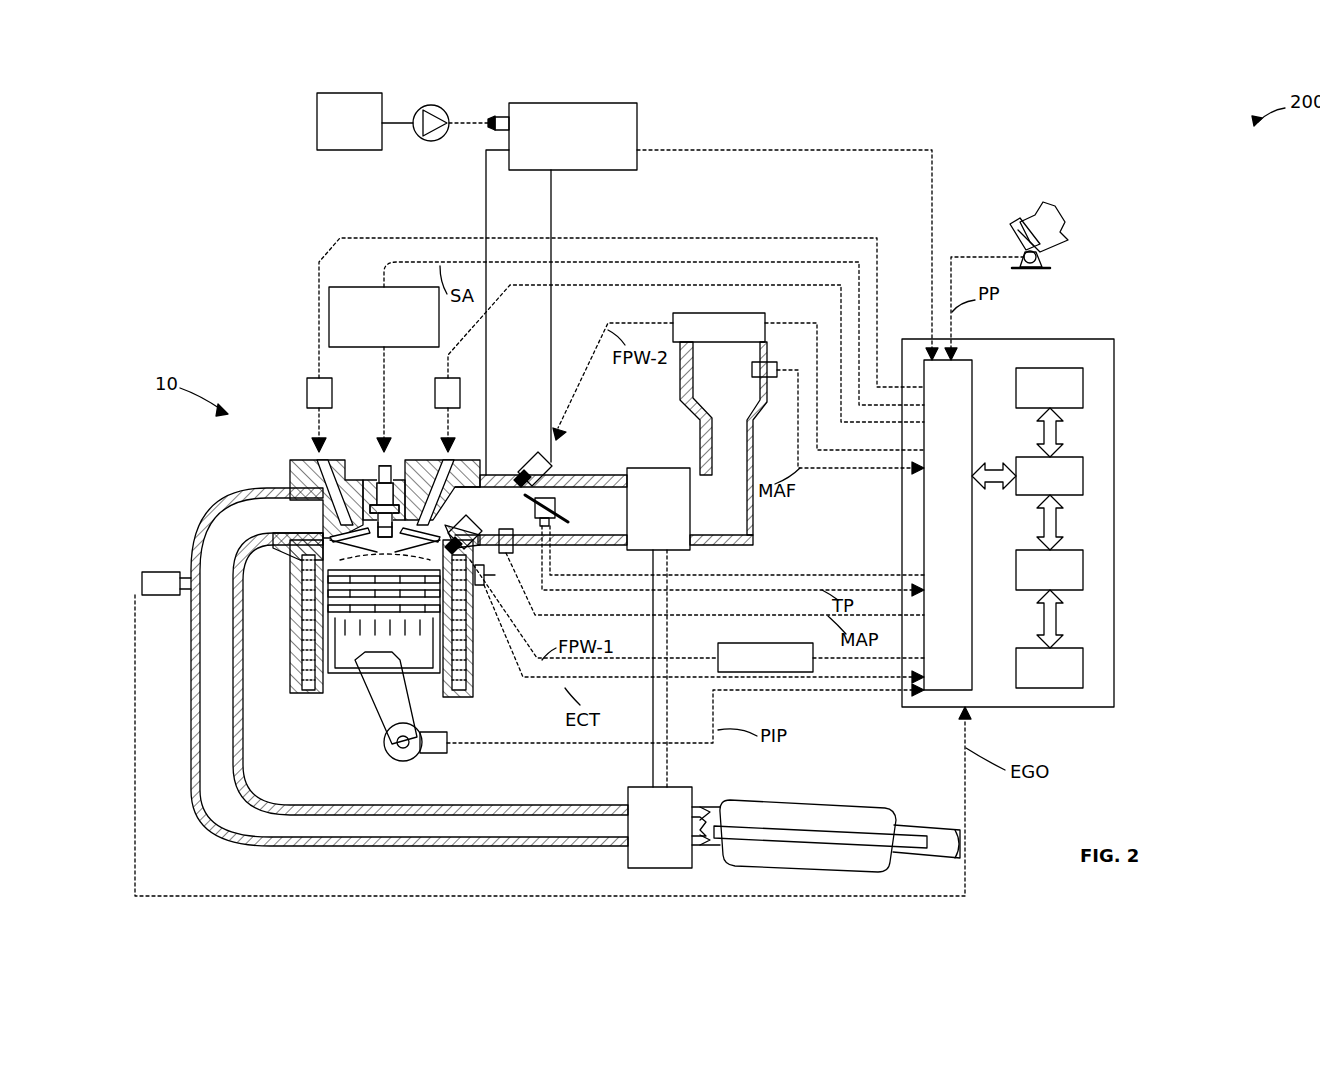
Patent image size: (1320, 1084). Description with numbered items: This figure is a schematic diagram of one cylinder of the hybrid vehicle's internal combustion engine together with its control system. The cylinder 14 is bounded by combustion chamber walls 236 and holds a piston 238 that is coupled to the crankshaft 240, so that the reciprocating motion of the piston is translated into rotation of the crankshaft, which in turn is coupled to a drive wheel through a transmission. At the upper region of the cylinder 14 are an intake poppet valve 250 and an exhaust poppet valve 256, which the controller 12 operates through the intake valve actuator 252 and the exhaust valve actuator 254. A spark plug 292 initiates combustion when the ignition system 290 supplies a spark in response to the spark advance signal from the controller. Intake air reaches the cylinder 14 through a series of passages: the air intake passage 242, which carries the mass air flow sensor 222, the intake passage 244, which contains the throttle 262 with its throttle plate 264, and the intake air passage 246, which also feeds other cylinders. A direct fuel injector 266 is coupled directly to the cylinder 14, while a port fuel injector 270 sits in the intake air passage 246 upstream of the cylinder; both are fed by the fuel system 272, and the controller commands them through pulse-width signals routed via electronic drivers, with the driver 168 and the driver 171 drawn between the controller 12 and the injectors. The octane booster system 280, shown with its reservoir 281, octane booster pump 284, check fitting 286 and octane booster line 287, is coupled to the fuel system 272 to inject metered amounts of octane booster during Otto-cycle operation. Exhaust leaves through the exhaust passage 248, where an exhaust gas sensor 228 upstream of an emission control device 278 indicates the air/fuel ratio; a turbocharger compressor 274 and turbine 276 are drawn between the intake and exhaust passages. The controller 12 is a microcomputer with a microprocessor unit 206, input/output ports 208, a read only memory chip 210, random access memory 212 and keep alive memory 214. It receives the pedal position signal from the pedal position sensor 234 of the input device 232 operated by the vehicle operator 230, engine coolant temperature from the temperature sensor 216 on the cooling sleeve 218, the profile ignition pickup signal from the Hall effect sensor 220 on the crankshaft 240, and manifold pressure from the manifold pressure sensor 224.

The octane booster system 280 is at (296, 102).
The fuel tank 281 is at (365, 121).
The octane booster pump 284 is at (436, 141).
The fuel line check valve 286 is at (466, 112).
The octane booster line 287 is at (480, 156).
The fuel system 272 is at (634, 114).
The vehicle operator 230 is at (1062, 220).
The input device 232 is at (1018, 236).
The pedal position sensor 234 is at (1045, 260).
The controller 12 is at (1112, 340).
The input/output ports 208 is at (975, 360).
The read only memory chip 210 is at (1083, 382).
The microprocessor unit 206 is at (1083, 470).
The random access memory 212 is at (1083, 570).
The keep alive memory 214 is at (1083, 668).
The ignition system 290 is at (335, 287).
The exhaust valve actuator 254 is at (305, 385).
The intake valve actuator 252 is at (434, 388).
The spark plug 292 is at (372, 470).
The exhaust poppet valve 256 is at (303, 475).
The intake poppet valve 250 is at (400, 478).
The exhaust passage 248 is at (409, 667).
The exhaust gas sensor 228 is at (140, 578).
The cylinder 14 is at (295, 572).
The combustion chamber walls 236 is at (323, 695).
The piston 238 is at (366, 650).
The crankshaft 240 is at (395, 760).
The Hall effect sensor 220 is at (438, 755).
The cooling sleeve 218 is at (478, 602).
The temperature sensor 216 is at (485, 640).
The direct fuel injector 266 is at (459, 532).
The driver 168 is at (722, 644).
The intake passage 244 is at (615, 510).
The intake air passage 246 is at (486, 511).
The compressor 274 is at (640, 468).
The air intake passage 242 is at (723, 438).
The driver 171 is at (676, 313).
The mass air flow sensor 222 is at (765, 362).
The port fuel injector 270 is at (525, 468).
The throttle 262 is at (548, 492).
The throttle plate 264 is at (562, 524).
The manifold pressure sensor 224 is at (515, 585).
The turbine 276 is at (627, 862).
The emission control device 278 is at (805, 800).